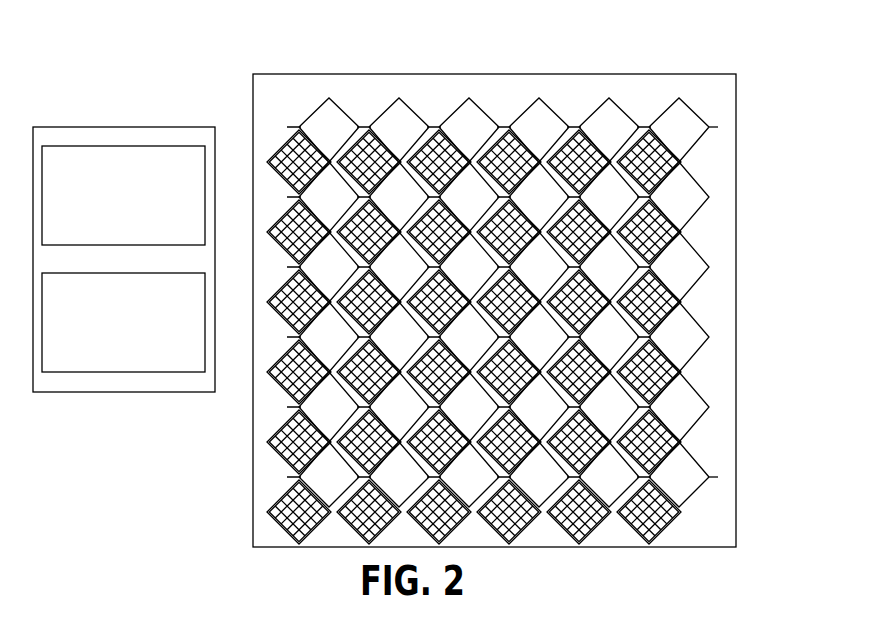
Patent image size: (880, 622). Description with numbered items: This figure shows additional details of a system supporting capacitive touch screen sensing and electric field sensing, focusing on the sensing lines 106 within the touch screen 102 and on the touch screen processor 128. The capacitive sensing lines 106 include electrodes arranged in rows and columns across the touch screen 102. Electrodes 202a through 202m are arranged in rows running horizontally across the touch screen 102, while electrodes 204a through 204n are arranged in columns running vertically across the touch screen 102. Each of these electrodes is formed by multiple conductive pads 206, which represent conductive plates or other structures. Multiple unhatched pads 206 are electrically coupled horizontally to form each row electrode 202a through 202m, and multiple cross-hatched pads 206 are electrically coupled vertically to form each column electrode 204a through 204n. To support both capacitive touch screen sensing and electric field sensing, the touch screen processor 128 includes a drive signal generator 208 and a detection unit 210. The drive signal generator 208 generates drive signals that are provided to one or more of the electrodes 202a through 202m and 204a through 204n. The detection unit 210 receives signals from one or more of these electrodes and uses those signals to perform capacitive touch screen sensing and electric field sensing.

The touch screen 102 is at (464, 58).
The sensing lines 106 is at (516, 97).
The touch screen processor 128 is at (58, 126).
The electrode 202a is at (723, 117).
The electrode 202m is at (723, 459).
The electrode 204a is at (297, 109).
The electrode 204n is at (647, 100).
The conductive pads 206 is at (703, 192).
The drive signal generator 208 is at (155, 146).
The detection unit 210 is at (125, 373).